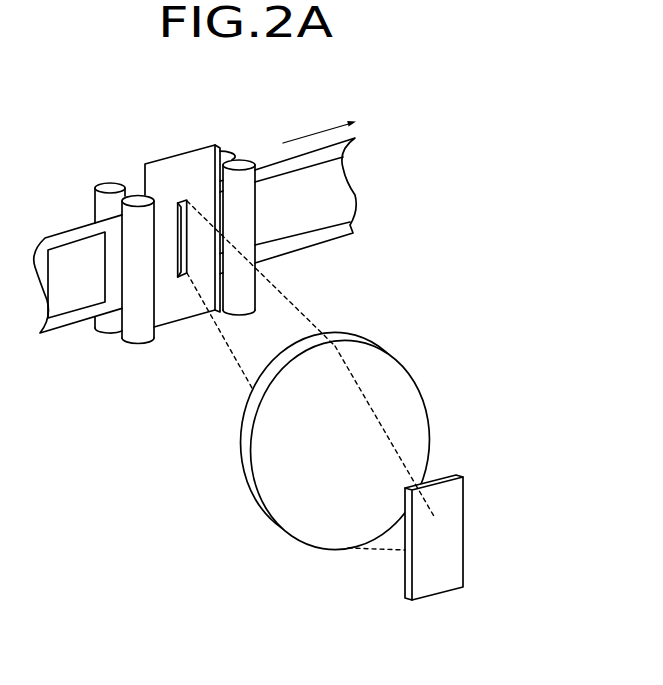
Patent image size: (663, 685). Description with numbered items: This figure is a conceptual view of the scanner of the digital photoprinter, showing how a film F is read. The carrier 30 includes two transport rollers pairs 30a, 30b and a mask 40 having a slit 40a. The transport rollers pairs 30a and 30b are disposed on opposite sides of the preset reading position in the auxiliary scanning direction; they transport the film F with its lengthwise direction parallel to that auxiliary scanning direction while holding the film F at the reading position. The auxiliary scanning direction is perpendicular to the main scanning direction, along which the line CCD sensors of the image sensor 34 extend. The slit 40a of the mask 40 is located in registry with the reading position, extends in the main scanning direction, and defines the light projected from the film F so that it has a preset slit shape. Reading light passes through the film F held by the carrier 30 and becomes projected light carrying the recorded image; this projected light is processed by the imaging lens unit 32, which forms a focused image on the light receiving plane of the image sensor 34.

The carrier 30 is at (114, 146).
The transport rollers pair 30a is at (133, 322).
The transport rollers pair 30b is at (255, 245).
The mask 40 is at (177, 303).
The slit 40a is at (188, 152).
The film F is at (322, 185).
The imaging lens unit 32 is at (385, 380).
The image sensor 34 is at (447, 528).